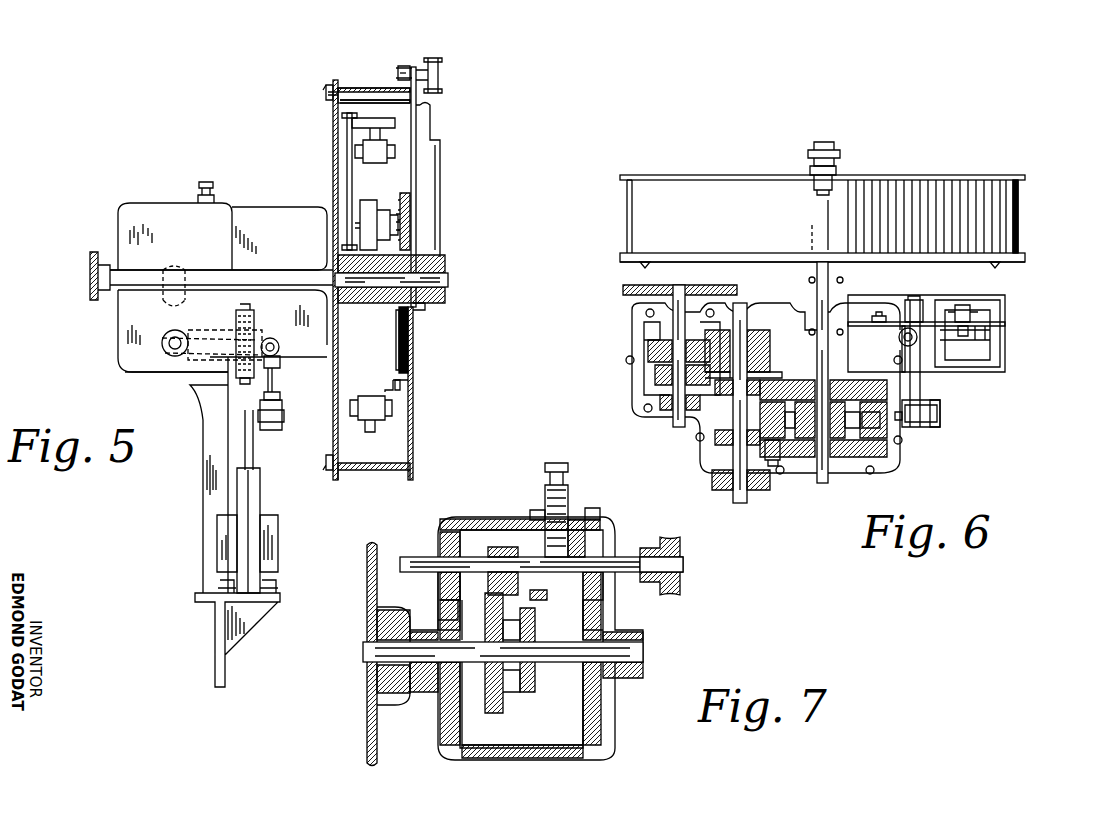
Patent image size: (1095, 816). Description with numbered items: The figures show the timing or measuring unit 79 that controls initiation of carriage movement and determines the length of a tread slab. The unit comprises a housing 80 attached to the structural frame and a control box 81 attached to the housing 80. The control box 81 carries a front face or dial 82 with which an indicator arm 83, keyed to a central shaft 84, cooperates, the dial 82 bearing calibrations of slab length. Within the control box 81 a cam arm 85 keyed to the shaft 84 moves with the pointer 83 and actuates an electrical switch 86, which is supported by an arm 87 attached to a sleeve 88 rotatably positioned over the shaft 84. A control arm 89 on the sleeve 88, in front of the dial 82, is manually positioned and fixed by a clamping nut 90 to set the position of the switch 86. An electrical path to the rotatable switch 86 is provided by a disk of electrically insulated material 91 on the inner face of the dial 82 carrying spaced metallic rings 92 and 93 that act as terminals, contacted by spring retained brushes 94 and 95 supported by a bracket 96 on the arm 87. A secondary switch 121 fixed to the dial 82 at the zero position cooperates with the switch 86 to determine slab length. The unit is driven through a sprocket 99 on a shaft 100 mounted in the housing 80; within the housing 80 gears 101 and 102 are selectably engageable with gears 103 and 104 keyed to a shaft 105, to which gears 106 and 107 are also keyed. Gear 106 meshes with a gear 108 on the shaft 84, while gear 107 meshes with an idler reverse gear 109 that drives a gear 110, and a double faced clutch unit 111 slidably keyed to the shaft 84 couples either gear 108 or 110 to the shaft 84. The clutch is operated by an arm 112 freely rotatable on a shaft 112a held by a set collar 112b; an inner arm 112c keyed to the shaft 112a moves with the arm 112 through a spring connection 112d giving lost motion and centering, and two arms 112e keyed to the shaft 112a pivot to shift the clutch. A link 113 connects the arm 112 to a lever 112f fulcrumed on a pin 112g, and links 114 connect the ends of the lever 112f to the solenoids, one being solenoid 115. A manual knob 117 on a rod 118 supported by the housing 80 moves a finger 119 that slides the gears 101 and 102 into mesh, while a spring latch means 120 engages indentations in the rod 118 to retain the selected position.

In FIG. 6, the measuring unit 79 is at (748, 195).
In FIG. 5, the housing 80 is at (130, 212).
In FIG. 5, the control box 81 is at (333, 150).
In FIG. 6, the control box 81 is at (995, 268).
In FIG. 5, the dial 82 is at (413, 440).
In FIG. 6, the dial 82 is at (678, 178).
In FIG. 5, the indicator arm 83 is at (440, 220).
In FIG. 6, the indicator arm 83 is at (840, 145).
In FIG. 5, the central shaft 84 is at (450, 280).
In FIG. 6, the central shaft 84 is at (822, 483).
In FIG. 5, the cam arm 85 is at (350, 180).
In FIG. 5, the electrical switch 86 is at (390, 130).
In FIG. 5, the arm 87 is at (338, 152).
In FIG. 5, the sleeve 88 is at (425, 305).
In FIG. 5, the control arm 89 is at (440, 170).
In FIG. 5, the clamping nut 90 is at (438, 70).
In FIG. 6, the clamping nut 90 is at (836, 170).
In FIG. 5, the disk of electrically insulated material 91 is at (413, 340).
In FIG. 5, the metallic ring 92 is at (398, 333).
In FIG. 5, the metallic ring 93 is at (397, 345).
In FIG. 5, the brush 94 is at (410, 215).
In FIG. 5, the brush 95 is at (412, 248).
In FIG. 5, the bracket 96 is at (362, 218).
In FIG. 6, the sprocket 99 is at (650, 290).
In FIG. 7, the sprocket 99 is at (367, 728).
In FIG. 6, the shaft 100 is at (676, 428).
In FIG. 7, the shaft 100 is at (645, 652).
In FIG. 6, the gear 101 is at (648, 345).
In FIG. 7, the gear 101 is at (497, 700).
In FIG. 6, the gear 102 is at (660, 365).
In FIG. 7, the gear 102 is at (530, 680).
In FIG. 6, the gear 103 is at (760, 332).
In FIG. 6, the gear 104 is at (660, 372).
In FIG. 6, the shaft 105 is at (740, 503).
In FIG. 6, the gear 106 is at (725, 432).
In FIG. 6, the gear 107 is at (730, 455).
In FIG. 6, the gear 108 is at (885, 385).
In FIG. 6, the idler reverse gear 109 is at (778, 470).
In FIG. 6, the gear 110 is at (850, 440).
In FIG. 6, the double faced clutch unit 111 is at (958, 463).
In FIG. 5, the arm 112 is at (217, 355).
In FIG. 6, the arm 112 is at (925, 405).
In FIG. 6, the shaft 112a is at (942, 410).
In FIG. 6, the set collar 112b is at (940, 425).
In FIG. 5, the inner arm 112c is at (207, 342).
In FIG. 6, the inner arm 112c is at (925, 352).
In FIG. 5, the spring connection 112d is at (254, 320).
In FIG. 6, the spring connection 112d is at (912, 320).
In FIG. 5, the arms 112e is at (165, 308).
In FIG. 6, the arms 112e is at (914, 448).
In FIG. 5, the lever 112f is at (262, 428).
In FIG. 6, the lever 112f is at (990, 322).
In FIG. 6, the pin 112g is at (880, 316).
In FIG. 5, the link 113 is at (277, 380).
In FIG. 6, the link 113 is at (908, 300).
In FIG. 5, the links 114 is at (255, 456).
In FIG. 6, the links 114 is at (975, 340).
In FIG. 5, the solenoid 115 is at (278, 540).
In FIG. 7, the manual knob 117 is at (680, 590).
In FIG. 7, the rod 118 is at (405, 556).
In FIG. 7, the finger 119 is at (503, 550).
In FIG. 7, the spring latch means 120 is at (528, 510).
In FIG. 5, the secondary switch 121 is at (370, 432).